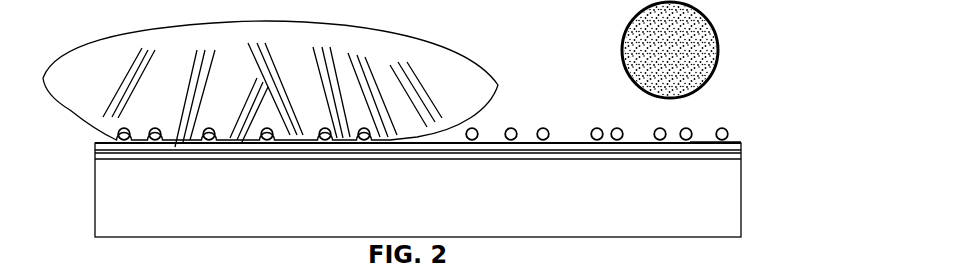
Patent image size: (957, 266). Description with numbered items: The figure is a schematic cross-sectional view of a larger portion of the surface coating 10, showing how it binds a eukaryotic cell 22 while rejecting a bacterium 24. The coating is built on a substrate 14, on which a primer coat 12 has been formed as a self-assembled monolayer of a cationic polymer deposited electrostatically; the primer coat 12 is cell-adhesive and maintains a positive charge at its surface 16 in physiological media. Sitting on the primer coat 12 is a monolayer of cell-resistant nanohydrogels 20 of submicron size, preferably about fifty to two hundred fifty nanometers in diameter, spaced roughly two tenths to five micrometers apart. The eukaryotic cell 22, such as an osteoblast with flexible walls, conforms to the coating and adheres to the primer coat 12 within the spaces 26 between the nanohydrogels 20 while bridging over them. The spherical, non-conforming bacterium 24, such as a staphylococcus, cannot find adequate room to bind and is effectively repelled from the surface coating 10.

The surface coating 10 is at (455, 155).
The primer coat 12 is at (742, 145).
The substrate 14 is at (742, 215).
The surface 16 is at (700, 142).
The cell-resistant nanohydrogels 20 is at (513, 127).
The eukaryotic cell 22 is at (92, 40).
The bacterium 24 is at (720, 48).
The spaces 26 is at (175, 143).